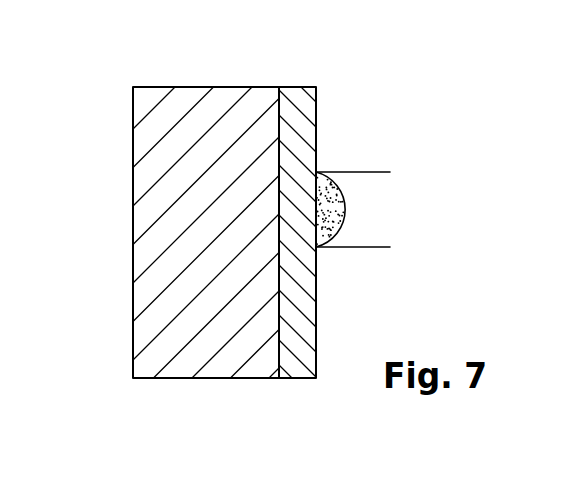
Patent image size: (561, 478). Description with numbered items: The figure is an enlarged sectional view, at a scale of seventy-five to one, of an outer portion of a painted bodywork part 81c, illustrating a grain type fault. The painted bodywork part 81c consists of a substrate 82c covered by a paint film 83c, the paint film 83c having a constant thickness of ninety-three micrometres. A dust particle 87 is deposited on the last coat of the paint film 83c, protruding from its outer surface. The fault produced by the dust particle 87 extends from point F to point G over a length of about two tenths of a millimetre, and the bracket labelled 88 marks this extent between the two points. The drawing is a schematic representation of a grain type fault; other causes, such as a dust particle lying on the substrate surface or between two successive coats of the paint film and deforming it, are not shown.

The painted bodywork part 81c is at (187, 76).
The substrate 82c is at (173, 219).
The paint film 83c is at (305, 110).
The dust particle 87 is at (332, 228).
The range between F and G 88 is at (423, 168).